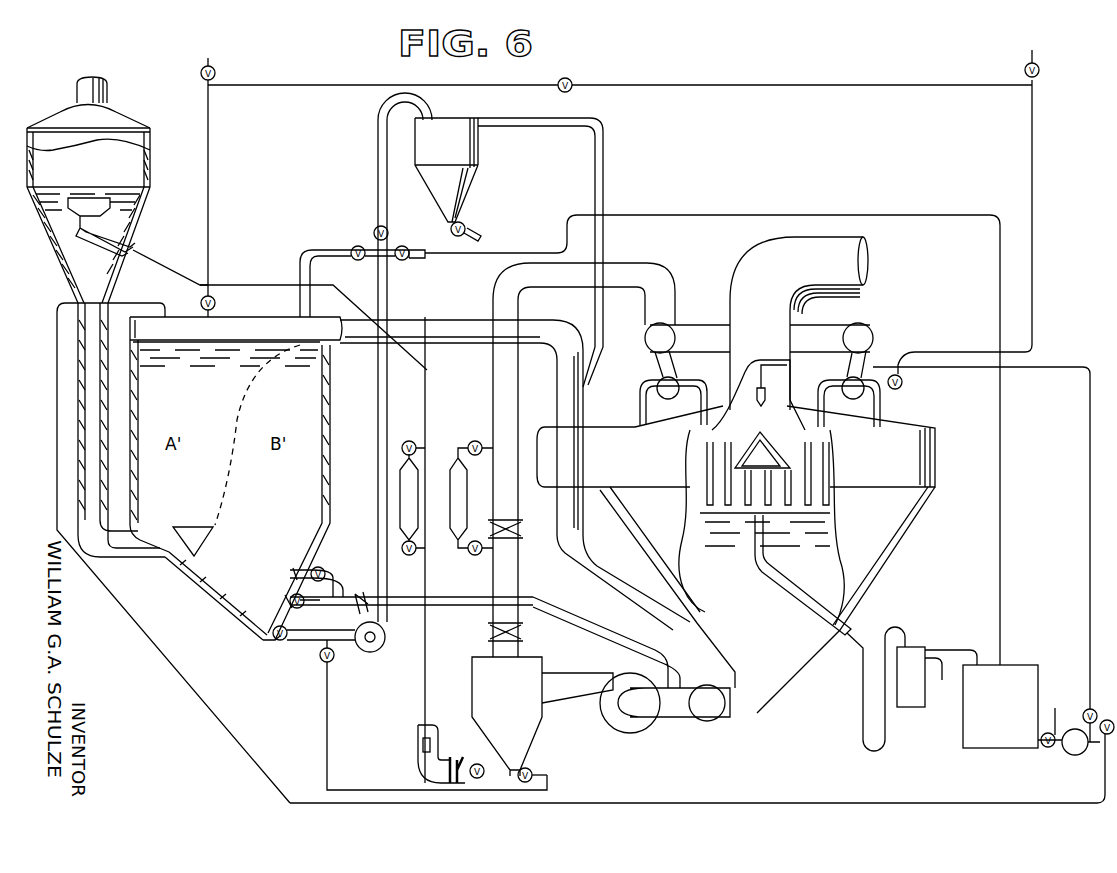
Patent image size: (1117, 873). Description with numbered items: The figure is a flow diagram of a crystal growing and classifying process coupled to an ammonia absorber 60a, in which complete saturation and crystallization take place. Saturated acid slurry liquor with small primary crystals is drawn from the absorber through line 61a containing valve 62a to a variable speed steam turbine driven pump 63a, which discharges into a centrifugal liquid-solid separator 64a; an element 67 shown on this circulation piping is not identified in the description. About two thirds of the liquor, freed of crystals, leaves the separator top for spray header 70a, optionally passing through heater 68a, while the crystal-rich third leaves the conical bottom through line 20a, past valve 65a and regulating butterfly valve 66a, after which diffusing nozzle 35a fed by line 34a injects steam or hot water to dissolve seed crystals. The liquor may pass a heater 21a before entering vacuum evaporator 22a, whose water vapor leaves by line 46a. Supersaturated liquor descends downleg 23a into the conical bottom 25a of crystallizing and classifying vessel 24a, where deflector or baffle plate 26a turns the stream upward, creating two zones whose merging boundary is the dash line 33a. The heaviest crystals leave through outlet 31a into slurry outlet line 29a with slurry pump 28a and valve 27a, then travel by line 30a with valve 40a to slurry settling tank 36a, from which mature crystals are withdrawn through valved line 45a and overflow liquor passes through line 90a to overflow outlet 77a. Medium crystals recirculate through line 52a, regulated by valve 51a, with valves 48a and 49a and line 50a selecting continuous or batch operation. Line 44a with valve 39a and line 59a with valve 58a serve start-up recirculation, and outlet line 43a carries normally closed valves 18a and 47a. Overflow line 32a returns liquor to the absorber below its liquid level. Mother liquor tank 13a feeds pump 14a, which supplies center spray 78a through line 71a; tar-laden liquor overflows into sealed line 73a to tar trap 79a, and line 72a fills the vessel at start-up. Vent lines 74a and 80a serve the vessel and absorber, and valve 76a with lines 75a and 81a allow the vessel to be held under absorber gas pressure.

The mother liquor tank 13a is at (1015, 668).
The pump 14a is at (1068, 752).
The valve 18a is at (532, 770).
The line 20a is at (263, 283).
The heater 21a is at (405, 440).
The vacuum evaporator 22a is at (150, 160).
The downleg 23a is at (78, 440).
The crystallizing and classifying vessel 24a is at (331, 378).
The conical bottom 25a is at (205, 590).
The deflector or baffle plate 26a is at (208, 548).
The valve 27a is at (279, 641).
The slurry pump 28a is at (385, 645).
The slurry outlet line 29a is at (340, 645).
The line 30a is at (378, 176).
The outlet 31a is at (262, 634).
The overflow line 32a is at (580, 560).
The dash line 33a is at (250, 388).
The line 34a is at (418, 775).
The diffusing nozzle 35a is at (423, 743).
The slurry settling tank 36a is at (470, 196).
The valve 39a is at (406, 262).
The valve 40a is at (374, 231).
The outlet line 43a is at (327, 705).
The line 44a is at (1000, 578).
The valved line 45a is at (460, 222).
The line 46a is at (78, 93).
The valve 47a is at (320, 663).
The valve 48a is at (305, 607).
The valve 49a is at (325, 571).
The line 50a is at (380, 560).
The valve 51a is at (359, 592).
The line 52a is at (600, 630).
The valve 58a is at (355, 260).
The line 59a is at (326, 252).
The ammonia absorber 60a is at (875, 555).
The line 61a is at (507, 268).
The valve 62a is at (700, 720).
The variable speed steam turbine driven pump 63a is at (612, 700).
The centrifugal liquid-solid separator 64a is at (472, 680).
The valve 65a is at (480, 762).
The regulating butterfly valve 66a is at (457, 760).
The valve 67 is at (488, 630).
The heater 68a is at (452, 460).
The spray header 70a is at (676, 332).
The line 71a is at (1090, 618).
The line 72a is at (940, 803).
The sealed line 73a is at (845, 618).
The vent line 74a is at (206, 275).
The line 75a is at (200, 68).
The valve 76a is at (560, 82).
The overflow outlet 77a is at (644, 372).
The center spray 78a is at (760, 406).
The tar trap 79a is at (912, 706).
The vent line 80a is at (1030, 186).
The line 81a is at (1024, 70).
The line 90a is at (604, 155).